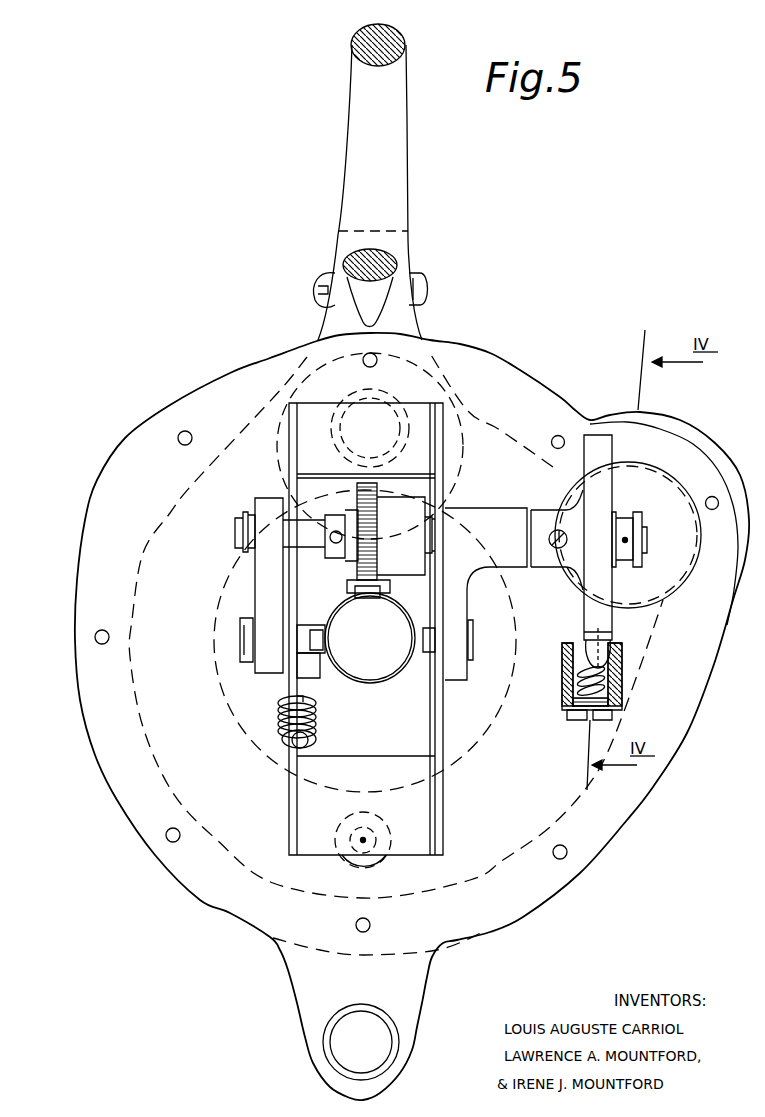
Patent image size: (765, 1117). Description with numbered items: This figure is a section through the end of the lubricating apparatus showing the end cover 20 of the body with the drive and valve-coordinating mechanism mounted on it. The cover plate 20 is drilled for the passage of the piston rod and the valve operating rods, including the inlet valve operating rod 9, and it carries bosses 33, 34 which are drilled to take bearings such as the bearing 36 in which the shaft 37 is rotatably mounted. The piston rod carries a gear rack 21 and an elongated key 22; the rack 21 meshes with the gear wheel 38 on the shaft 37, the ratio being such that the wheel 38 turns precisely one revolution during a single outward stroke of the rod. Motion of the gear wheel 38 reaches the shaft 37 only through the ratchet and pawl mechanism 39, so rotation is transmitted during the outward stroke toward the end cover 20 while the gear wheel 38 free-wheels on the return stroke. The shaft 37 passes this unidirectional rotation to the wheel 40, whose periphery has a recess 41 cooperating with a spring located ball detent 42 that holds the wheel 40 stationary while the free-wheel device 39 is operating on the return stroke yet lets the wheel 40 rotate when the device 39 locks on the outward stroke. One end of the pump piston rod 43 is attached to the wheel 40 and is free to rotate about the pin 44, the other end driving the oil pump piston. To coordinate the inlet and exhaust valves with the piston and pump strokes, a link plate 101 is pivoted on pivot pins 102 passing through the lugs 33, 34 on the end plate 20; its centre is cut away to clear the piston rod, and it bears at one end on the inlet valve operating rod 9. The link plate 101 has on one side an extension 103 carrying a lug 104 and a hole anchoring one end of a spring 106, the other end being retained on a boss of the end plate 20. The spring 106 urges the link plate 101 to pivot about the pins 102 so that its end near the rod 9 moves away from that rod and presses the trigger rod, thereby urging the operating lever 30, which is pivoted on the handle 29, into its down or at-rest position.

The inlet valve operating rod 9 is at (386, 410).
The end cover 20 is at (523, 372).
The gear rack 21 is at (368, 593).
The elongated key 22 is at (317, 640).
The handle 29 is at (363, 45).
The operating lever 30 is at (390, 259).
The boss 33 is at (500, 515).
The boss 34 is at (262, 568).
The bearing 36 is at (248, 520).
The shaft 37 is at (430, 536).
The gear wheel 38 is at (372, 534).
The ratchet and pawl mechanism 39 is at (430, 503).
The wheel 40 is at (598, 438).
The recess 41 is at (614, 636).
The spring located ball detent 42 is at (604, 660).
The piston rod 43 is at (627, 516).
The pin 44 is at (648, 540).
The link plate 101 is at (433, 741).
The pivot pins 102 is at (248, 638).
The extension 103 is at (290, 672).
The lug 104 is at (323, 677).
The spring 106 is at (290, 739).